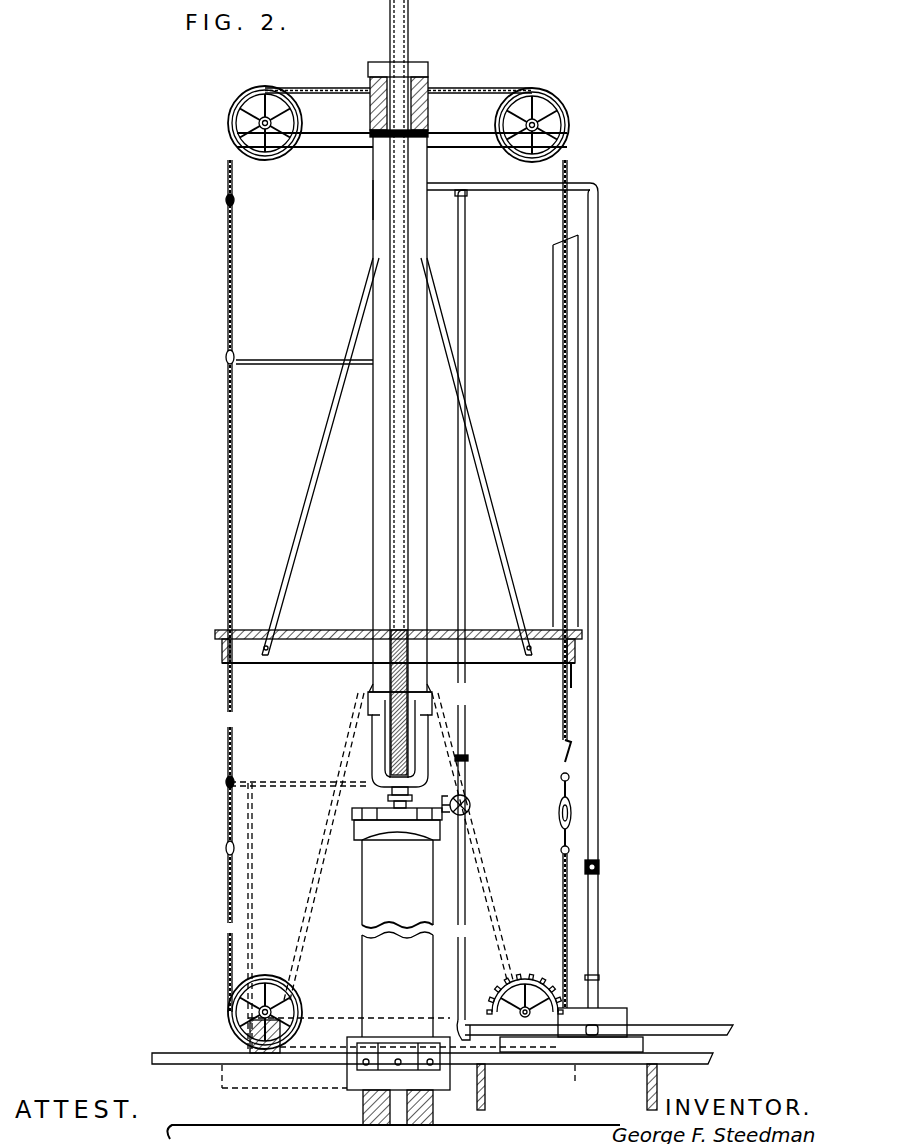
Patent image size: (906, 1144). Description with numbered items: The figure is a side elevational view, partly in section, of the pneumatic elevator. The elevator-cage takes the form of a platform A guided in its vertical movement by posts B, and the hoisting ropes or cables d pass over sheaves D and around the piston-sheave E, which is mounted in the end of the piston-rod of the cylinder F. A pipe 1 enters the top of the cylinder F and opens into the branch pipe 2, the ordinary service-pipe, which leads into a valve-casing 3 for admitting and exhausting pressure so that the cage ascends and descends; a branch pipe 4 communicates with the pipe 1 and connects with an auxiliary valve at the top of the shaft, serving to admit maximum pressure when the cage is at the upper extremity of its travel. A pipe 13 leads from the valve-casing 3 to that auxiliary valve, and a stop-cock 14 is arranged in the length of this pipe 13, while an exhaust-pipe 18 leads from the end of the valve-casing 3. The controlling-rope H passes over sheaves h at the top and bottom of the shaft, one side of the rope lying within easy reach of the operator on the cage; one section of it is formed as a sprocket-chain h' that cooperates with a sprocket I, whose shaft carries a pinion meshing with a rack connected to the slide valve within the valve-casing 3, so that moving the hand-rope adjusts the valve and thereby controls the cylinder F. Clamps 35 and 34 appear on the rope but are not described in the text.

The sheaves D is at (410, 36).
The posts B is at (386, 513).
The hoisting ropes or cables d is at (388, 200).
The sheaves h is at (384, 562).
The controlling-rope H is at (227, 502).
The sprocket-chain h' is at (602, 874).
The pipe 13 is at (598, 778).
The stop-cock 14 is at (600, 866).
The branch pipe 4 is at (466, 612).
The platform A is at (330, 632).
The rope clamp 35 is at (226, 356).
The rope clamp 34 is at (226, 847).
The piston-sheave E is at (395, 739).
The cylinder F is at (372, 905).
The pipe 1 is at (470, 826).
The service-pipe 2 is at (463, 892).
The exhaust-pipe 18 is at (693, 1024).
The valve-casing 3 is at (630, 1010).
The sprocket I is at (528, 974).